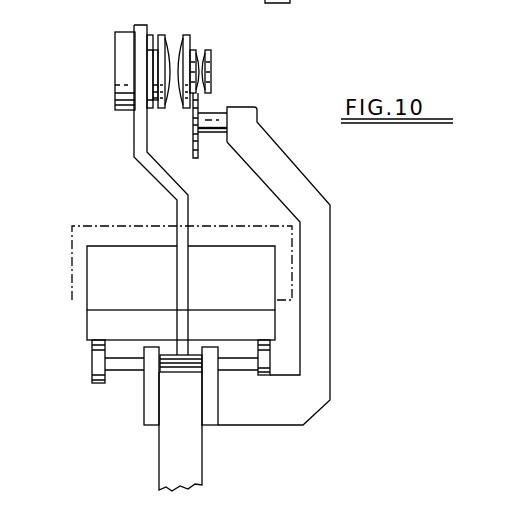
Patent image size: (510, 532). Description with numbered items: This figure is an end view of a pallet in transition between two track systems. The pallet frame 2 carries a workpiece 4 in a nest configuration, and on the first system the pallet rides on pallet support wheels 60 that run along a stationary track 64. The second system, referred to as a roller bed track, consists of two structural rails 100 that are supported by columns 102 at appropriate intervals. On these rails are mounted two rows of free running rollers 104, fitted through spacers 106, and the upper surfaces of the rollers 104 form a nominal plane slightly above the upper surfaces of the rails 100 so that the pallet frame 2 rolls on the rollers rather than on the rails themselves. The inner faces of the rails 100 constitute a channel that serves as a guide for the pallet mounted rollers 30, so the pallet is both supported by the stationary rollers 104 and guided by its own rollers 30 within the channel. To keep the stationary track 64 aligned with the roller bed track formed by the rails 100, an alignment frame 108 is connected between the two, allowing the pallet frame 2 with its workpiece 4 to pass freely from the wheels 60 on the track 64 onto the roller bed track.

The pallet frame 2 is at (87, 323).
The workpiece 4 is at (68, 268).
The pallet mounted rollers 30 is at (192, 355).
The pallet support wheels 60 is at (183, 35).
The stationary track 64 is at (200, 107).
The structural rails 100 is at (143, 417).
The columns 102 is at (197, 470).
The free running rollers 104 is at (97, 385).
The spacers 106 is at (125, 365).
The alignment frame 108 is at (331, 272).